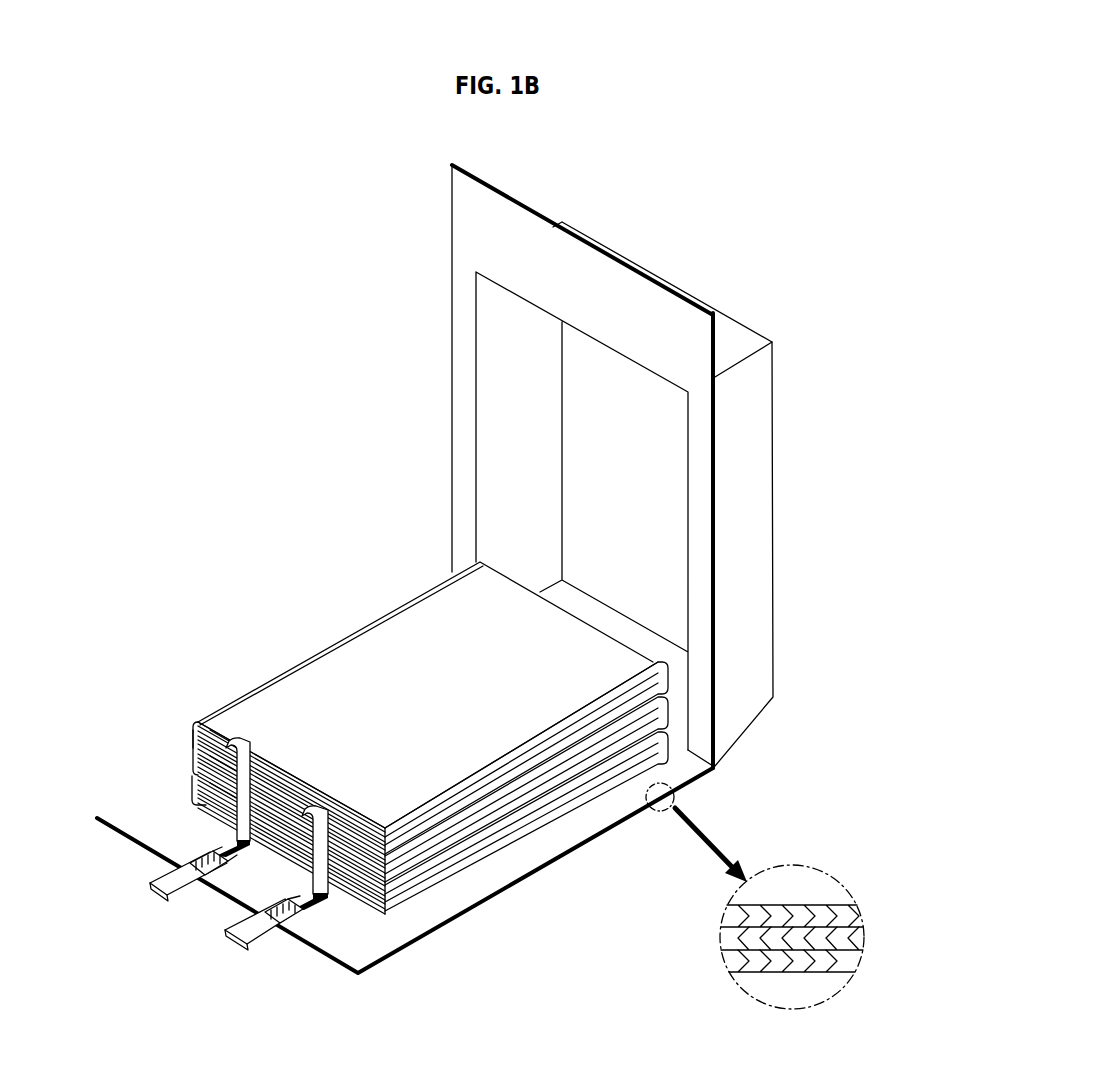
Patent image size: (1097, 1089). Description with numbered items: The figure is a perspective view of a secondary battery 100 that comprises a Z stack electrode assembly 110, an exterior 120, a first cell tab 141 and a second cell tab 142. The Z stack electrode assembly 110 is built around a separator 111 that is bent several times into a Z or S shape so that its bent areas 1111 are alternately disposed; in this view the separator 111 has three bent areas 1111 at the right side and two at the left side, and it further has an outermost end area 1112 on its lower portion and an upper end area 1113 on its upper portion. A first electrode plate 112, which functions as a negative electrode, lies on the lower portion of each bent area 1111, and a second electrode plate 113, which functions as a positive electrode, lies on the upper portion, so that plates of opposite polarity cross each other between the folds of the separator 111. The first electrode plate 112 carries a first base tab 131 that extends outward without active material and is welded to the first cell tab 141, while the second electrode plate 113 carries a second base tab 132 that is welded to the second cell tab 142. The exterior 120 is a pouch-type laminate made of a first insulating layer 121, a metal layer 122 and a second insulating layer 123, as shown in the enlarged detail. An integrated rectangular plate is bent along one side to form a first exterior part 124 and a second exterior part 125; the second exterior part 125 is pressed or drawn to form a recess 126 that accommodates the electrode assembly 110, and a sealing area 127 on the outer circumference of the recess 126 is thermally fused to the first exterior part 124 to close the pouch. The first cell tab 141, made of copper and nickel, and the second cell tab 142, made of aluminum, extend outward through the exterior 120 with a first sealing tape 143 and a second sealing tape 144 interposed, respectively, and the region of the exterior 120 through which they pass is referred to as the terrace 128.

The secondary battery 100 is at (297, 185).
The Z stack electrode assembly 110 is at (337, 634).
The separator 111 is at (465, 872).
The bent area 1111 is at (195, 775).
The outermost end area 1112 is at (192, 785).
The upper end area 1113 is at (198, 727).
The first electrode plate 112 is at (230, 820).
The second electrode plate 113 is at (382, 862).
The exterior 120 is at (738, 302).
The first insulating layer 121 is at (853, 960).
The metal layer 122 is at (858, 937).
The second insulating layer 123 is at (847, 918).
The first exterior part 124 is at (417, 922).
The second exterior part 125 is at (715, 557).
The recess 126 is at (648, 452).
The sealing area 127 is at (700, 617).
The terrace 128 is at (608, 282).
The first base tab 131 is at (240, 757).
The second base tab 132 is at (320, 810).
The first cell tab 141 is at (150, 892).
The second cell tab 142 is at (228, 938).
The first sealing tape 143 is at (222, 873).
The second sealing tape 144 is at (300, 923).